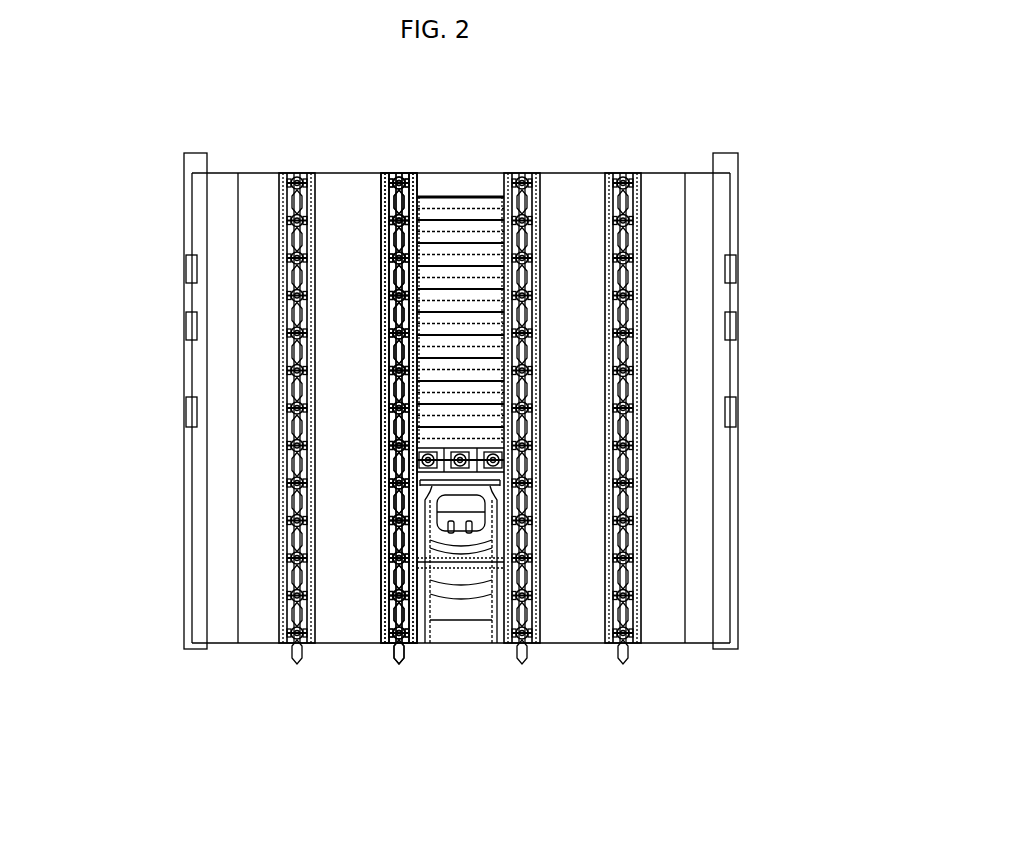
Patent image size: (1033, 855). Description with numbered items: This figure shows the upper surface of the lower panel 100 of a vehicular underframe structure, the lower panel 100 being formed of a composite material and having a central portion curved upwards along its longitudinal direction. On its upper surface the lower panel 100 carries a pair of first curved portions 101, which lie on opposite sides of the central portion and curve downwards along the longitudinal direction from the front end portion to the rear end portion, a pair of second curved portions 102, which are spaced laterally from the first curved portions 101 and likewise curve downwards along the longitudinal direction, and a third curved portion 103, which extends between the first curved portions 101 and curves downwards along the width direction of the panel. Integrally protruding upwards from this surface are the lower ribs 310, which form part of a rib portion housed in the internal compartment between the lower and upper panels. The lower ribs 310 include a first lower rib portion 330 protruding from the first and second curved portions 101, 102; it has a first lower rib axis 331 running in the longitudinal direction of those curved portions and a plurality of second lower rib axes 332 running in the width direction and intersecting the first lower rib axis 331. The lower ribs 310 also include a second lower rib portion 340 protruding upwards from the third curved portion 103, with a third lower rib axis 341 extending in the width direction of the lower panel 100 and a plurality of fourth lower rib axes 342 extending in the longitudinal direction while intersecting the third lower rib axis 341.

The lower panel 100 is at (160, 391).
The first curved portions 101 is at (383, 237).
The second curved portions 102 is at (283, 318).
The third curved portion 103 is at (415, 463).
The lower rib 310 is at (620, 426).
The first lower rib portion 330 is at (527, 166).
The first lower rib axis 331 is at (418, 188).
The second lower rib axes 332 is at (393, 170).
The second lower rib portion 340 is at (507, 474).
The third lower rib axis 341 is at (433, 464).
The fourth lower rib axes 342 is at (500, 473).